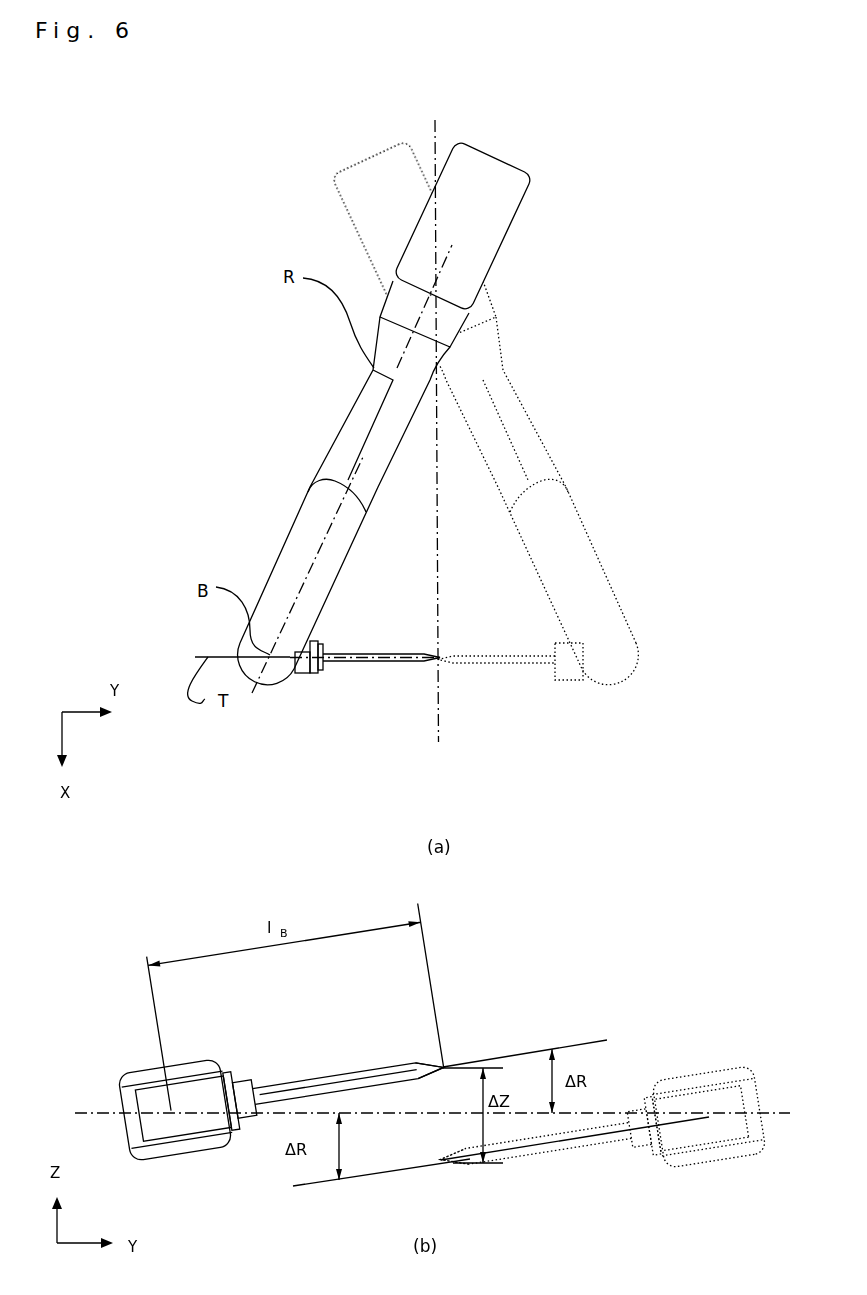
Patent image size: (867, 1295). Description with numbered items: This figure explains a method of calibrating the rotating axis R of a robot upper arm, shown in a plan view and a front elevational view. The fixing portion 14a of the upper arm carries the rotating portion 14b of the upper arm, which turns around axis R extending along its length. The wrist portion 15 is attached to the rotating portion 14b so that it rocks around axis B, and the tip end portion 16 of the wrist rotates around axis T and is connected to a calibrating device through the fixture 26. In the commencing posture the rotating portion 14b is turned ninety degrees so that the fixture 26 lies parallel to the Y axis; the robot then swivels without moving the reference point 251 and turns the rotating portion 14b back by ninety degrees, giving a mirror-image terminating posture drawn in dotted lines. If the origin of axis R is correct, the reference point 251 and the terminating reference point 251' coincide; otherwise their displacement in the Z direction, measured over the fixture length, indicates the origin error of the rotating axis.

The fixing portion of the upper arm 14a is at (493, 196).
The rotating portion of the upper arm 14b is at (363, 411).
The wrist portion 15 is at (297, 677).
The tip end portion of the wrist 16 is at (313, 677).
The fixture 26 is at (402, 652).
The reference point 251 is at (489, 1027).
The reference point at the terminating posture 251' is at (500, 1182).